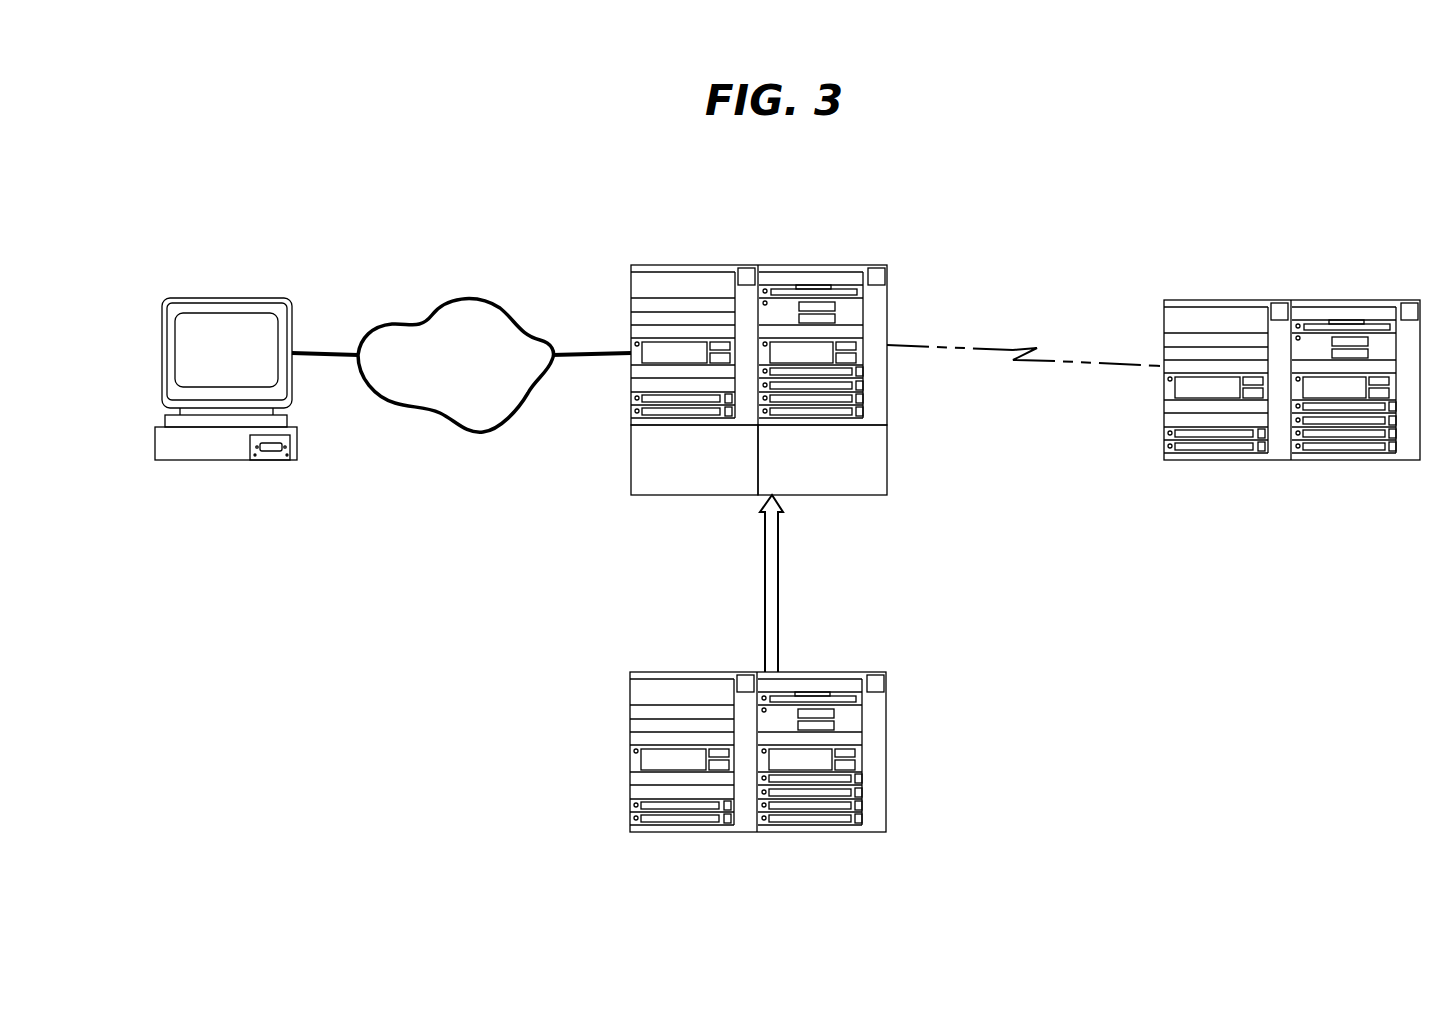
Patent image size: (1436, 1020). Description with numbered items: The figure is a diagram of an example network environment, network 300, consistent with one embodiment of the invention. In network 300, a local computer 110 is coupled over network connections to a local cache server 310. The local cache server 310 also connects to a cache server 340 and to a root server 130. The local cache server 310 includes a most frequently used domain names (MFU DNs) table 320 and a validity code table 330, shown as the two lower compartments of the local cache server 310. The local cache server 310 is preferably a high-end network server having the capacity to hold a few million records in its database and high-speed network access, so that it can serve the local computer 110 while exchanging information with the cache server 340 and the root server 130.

The local computer 110 is at (225, 298).
The root server 130 is at (1255, 300).
The network 300 is at (1038, 213).
The local cache server 310 is at (707, 265).
The most frequently used domain names table 320 is at (675, 497).
The validity code table 330 is at (825, 497).
The cache server 340 is at (840, 672).